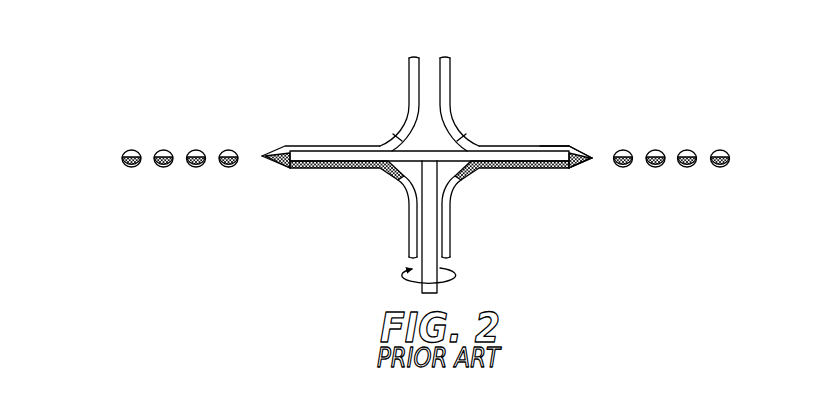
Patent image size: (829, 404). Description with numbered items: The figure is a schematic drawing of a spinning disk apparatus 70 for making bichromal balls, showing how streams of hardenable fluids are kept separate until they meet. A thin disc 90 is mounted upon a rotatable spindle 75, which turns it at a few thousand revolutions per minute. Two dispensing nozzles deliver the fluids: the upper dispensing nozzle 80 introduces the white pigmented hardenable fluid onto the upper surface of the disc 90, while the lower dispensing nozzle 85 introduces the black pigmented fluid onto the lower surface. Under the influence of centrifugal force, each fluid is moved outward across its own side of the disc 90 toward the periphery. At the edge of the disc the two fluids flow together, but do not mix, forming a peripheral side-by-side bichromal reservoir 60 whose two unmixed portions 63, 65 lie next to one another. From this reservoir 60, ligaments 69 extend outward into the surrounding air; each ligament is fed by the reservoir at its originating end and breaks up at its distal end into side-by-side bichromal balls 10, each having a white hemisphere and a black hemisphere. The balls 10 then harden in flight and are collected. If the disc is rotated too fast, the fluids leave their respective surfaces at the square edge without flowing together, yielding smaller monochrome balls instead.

The bichromal balls 10 is at (687, 150).
The peripheral side-by-side bichromal reservoir 60 is at (577, 168).
The side-by-side portion of reservoir 63 is at (571, 149).
The side-by-side portion of reservoir 65 is at (592, 158).
The ligaments 69 is at (592, 158).
The spinning disk apparatus 70 is at (375, 98).
The rotatable spindle 75 is at (433, 259).
The dispensing nozzle 80 is at (443, 97).
The dispensing nozzle 85 is at (446, 212).
The disc 90 is at (541, 159).